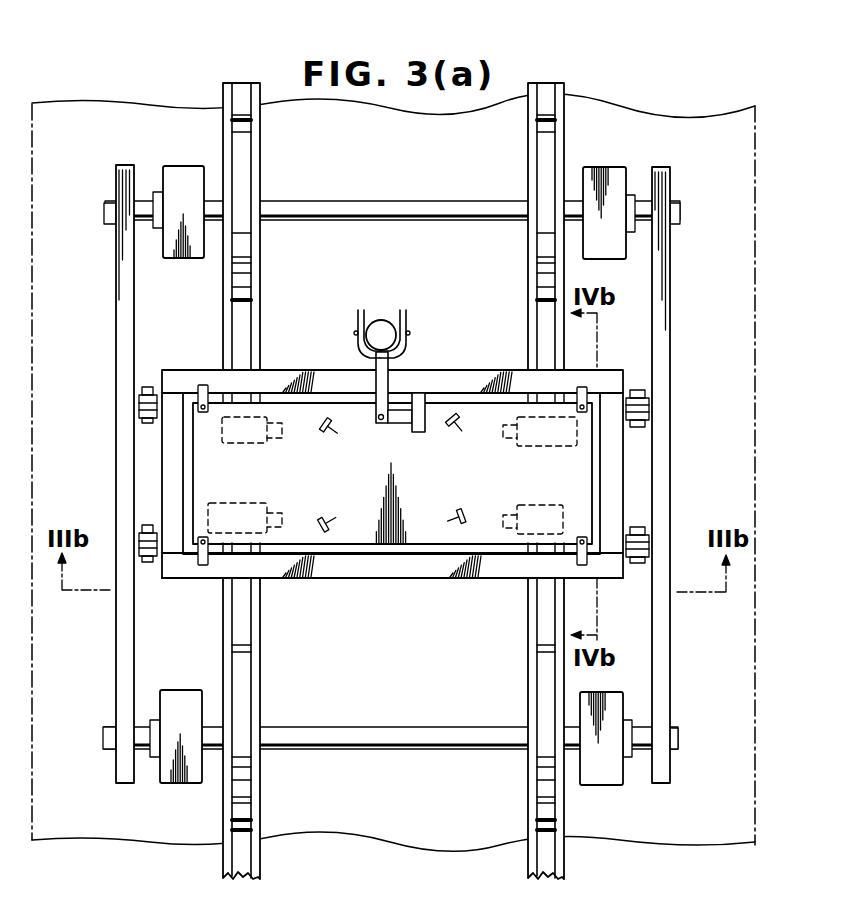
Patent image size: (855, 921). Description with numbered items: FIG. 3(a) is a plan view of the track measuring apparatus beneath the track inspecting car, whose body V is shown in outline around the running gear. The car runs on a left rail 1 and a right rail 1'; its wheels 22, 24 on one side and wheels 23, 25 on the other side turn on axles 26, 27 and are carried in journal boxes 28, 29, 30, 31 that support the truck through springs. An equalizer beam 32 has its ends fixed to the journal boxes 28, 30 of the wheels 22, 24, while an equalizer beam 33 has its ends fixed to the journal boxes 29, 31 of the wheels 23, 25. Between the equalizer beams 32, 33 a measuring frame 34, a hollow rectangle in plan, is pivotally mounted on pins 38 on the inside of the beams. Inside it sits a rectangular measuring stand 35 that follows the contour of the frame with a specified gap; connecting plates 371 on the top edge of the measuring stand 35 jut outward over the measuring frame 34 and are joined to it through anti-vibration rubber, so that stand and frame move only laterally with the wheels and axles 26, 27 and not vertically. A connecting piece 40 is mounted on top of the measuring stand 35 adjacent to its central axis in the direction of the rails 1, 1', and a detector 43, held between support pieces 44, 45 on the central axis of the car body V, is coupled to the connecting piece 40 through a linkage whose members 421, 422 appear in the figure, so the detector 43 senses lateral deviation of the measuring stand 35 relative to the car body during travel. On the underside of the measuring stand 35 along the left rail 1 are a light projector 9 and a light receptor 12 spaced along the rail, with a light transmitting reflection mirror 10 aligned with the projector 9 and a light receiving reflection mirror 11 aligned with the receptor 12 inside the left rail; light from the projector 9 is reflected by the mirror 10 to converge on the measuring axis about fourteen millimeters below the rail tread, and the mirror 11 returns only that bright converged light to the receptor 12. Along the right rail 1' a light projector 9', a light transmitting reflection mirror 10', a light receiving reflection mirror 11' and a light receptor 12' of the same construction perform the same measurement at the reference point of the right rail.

The left rail 1 is at (279, 860).
The right rail 1' is at (507, 862).
The light projector 9 is at (258, 466).
The light projector 9' is at (564, 483).
The light transmitting reflection mirror 10 is at (320, 445).
The light transmitting reflection mirror 10' is at (434, 511).
The light receiving reflection mirror 11 is at (347, 506).
The light receiving reflection mirror 11' is at (472, 442).
The light receptor 12 is at (241, 475).
The light receptor 12' is at (540, 475).
The wheel 22 is at (262, 160).
The wheel 23 is at (528, 163).
The wheel 24 is at (262, 697).
The wheel 25 is at (528, 694).
The axle 26 is at (405, 204).
The axle 27 is at (405, 727).
The journal box 28 is at (188, 176).
The journal box 29 is at (608, 176).
The journal box 30 is at (177, 783).
The journal box 31 is at (597, 786).
The equalizer beam 32 is at (116, 448).
The equalizer beam 33 is at (666, 447).
The measuring frame 34 is at (478, 377).
The measuring stand 35 is at (413, 545).
The pin 38 is at (151, 389).
The connecting piece 40 is at (418, 432).
The detector 43 is at (382, 320).
The support piece 44 is at (358, 322).
The support piece 45 is at (406, 322).
The connecting plate 371 is at (203, 384).
The bracket 421 is at (392, 418).
The stem 422 is at (390, 368).
The body of the track inspecting car V is at (672, 104).